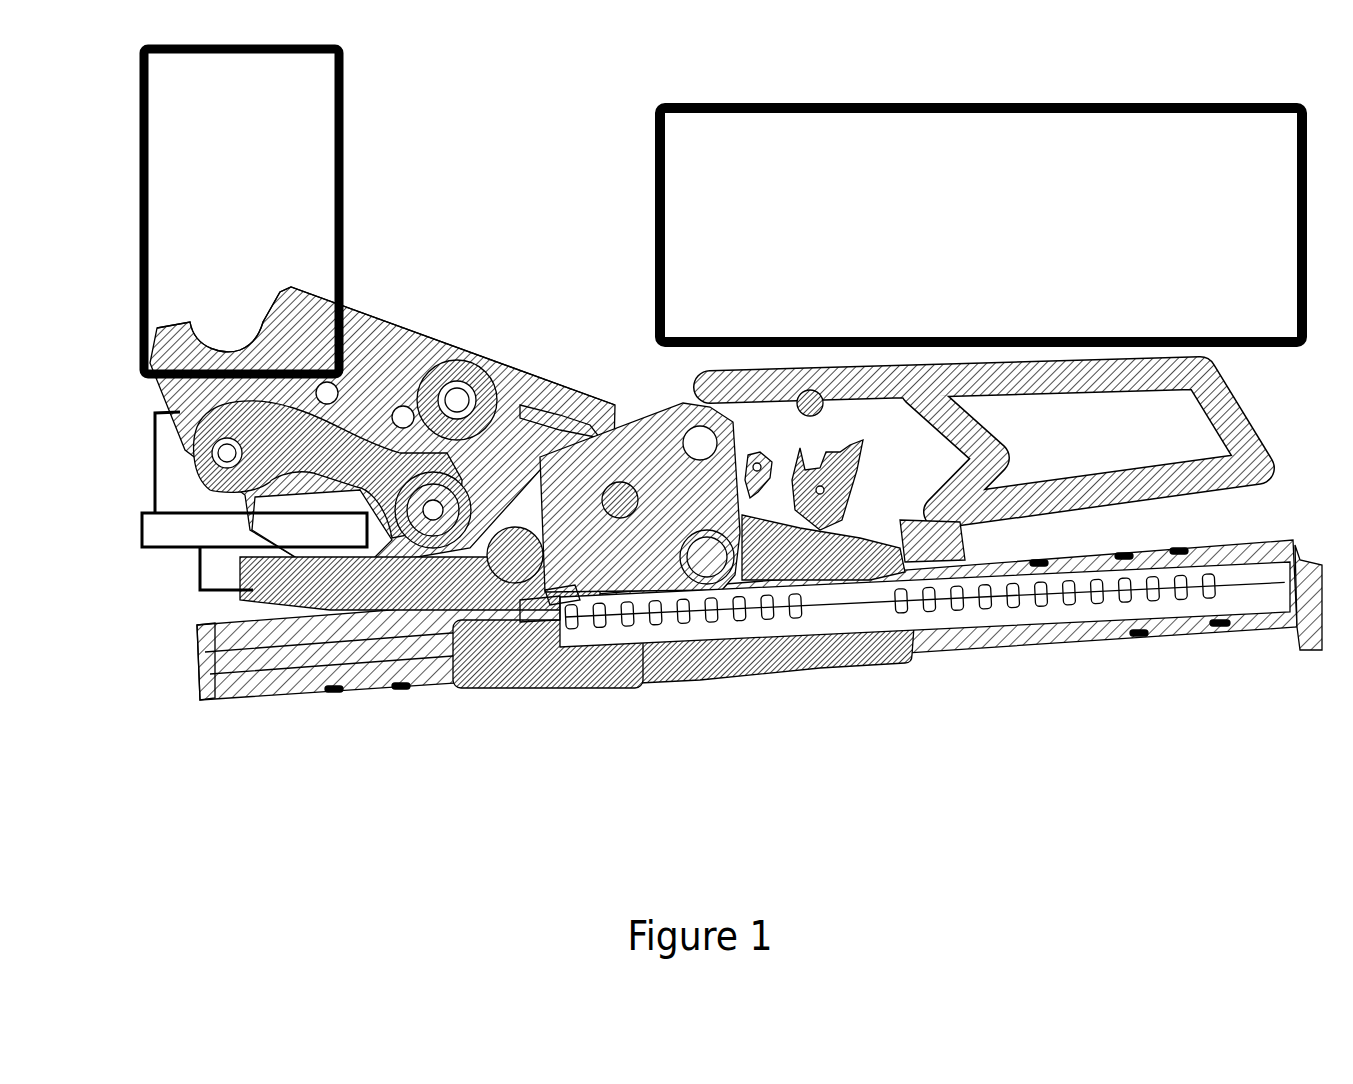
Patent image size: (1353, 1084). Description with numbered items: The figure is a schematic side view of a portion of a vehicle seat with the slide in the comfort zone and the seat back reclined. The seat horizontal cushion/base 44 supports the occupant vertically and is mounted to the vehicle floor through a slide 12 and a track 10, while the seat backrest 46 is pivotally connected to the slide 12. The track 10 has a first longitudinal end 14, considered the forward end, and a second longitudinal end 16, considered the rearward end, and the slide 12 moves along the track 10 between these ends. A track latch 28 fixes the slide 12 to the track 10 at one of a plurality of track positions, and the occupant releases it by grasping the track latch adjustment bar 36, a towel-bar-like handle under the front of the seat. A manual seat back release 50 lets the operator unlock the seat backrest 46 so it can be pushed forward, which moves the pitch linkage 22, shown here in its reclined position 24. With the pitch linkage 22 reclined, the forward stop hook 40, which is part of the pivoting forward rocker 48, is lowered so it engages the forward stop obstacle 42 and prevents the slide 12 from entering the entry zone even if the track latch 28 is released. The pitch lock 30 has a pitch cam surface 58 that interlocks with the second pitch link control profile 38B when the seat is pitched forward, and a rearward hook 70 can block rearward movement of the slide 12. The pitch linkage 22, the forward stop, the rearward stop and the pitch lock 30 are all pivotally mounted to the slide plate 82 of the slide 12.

The track 10 is at (1015, 660).
The slide 12 is at (478, 290).
The first longitudinal end 14 is at (1320, 620).
The second longitudinal end 16 is at (203, 690).
The pitch linkage 22 is at (543, 455).
The reclined position 24 is at (372, 204).
The track latch 28 is at (770, 668).
The pitch lock 30 is at (529, 640).
The track latch adjustment bar 36 is at (1256, 448).
The second pitch link control profile 38B is at (557, 605).
The forward stop hook 40 is at (590, 600).
The forward stop obstacle 42 is at (883, 613).
The seat cushion/base 44 is at (657, 197).
The seat backrest 46 is at (347, 307).
The forward rocker 48 is at (757, 535).
The manual seat back release 50 is at (200, 547).
The pitch cam surface 58 is at (512, 520).
The rearward hook 70 is at (837, 560).
The slide plate 82 is at (665, 435).